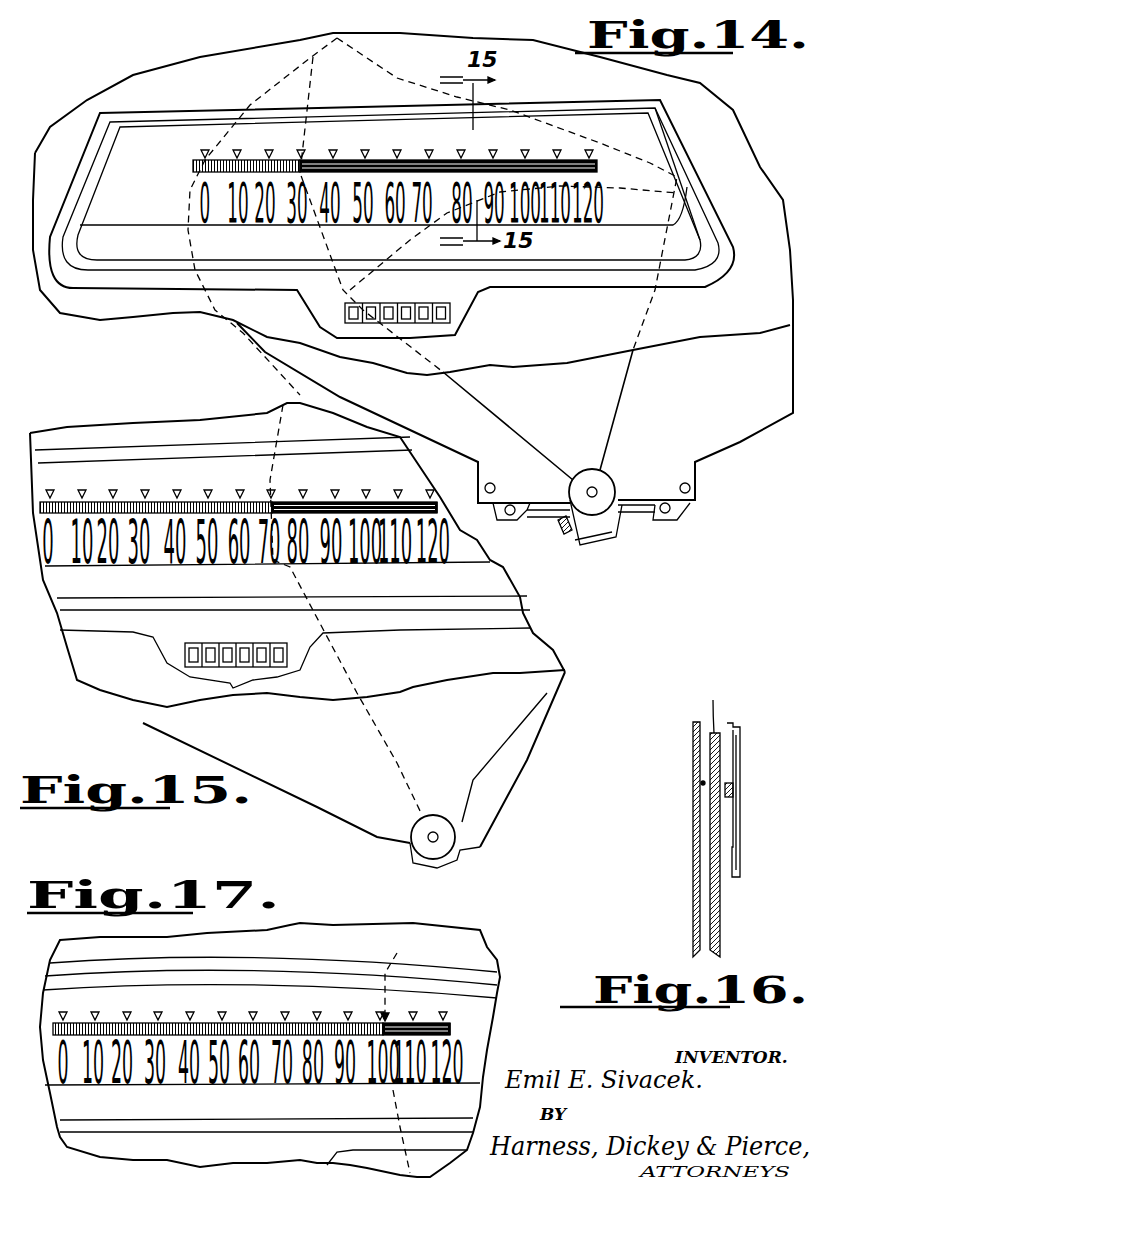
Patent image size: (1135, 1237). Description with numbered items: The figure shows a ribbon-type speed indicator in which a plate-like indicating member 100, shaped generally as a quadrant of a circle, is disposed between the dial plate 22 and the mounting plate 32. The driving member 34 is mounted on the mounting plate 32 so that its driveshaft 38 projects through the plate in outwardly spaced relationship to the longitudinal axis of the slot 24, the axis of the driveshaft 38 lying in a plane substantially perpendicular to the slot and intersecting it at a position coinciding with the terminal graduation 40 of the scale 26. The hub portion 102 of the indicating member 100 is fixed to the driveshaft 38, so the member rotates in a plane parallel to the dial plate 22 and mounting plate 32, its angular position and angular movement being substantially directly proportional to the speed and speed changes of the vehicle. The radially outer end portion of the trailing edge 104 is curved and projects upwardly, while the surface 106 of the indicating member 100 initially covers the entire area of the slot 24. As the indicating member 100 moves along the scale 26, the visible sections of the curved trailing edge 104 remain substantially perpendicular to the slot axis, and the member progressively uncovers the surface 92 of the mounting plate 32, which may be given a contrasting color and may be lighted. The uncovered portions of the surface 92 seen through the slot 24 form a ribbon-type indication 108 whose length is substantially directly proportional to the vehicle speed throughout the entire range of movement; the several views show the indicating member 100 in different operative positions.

In FIG. 14, the dial plate 22 is at (147, 175).
In FIG. 15, the dial plate 22 is at (95, 484).
In FIG. 16, the dial plate 22 is at (740, 727).
In FIG. 17, the dial plate 22 is at (98, 1011).
In FIG. 14, the slot 24 is at (252, 157).
In FIG. 15, the slot 24 is at (195, 500).
In FIG. 16, the slot 24 is at (733, 790).
In FIG. 17, the slot 24 is at (130, 1030).
In FIG. 14, the scale 26 is at (345, 145).
In FIG. 15, the scale 26 is at (300, 490).
In FIG. 17, the scale 26 is at (173, 1017).
In FIG. 16, the mounting plate 32 is at (700, 763).
In FIG. 14, the driving member 34 is at (623, 535).
In FIG. 14, the driveshaft 38 is at (588, 491).
In FIG. 15, the driveshaft 38 is at (429, 836).
In FIG. 15, the terminal graduation 40 is at (457, 483).
In FIG. 17, the terminal graduation 40 is at (457, 1023).
In FIG. 16, the surface of the mounting plate 92 is at (703, 783).
In FIG. 14, the indicating member 100 is at (630, 377).
In FIG. 15, the indicating member 100 is at (517, 730).
In FIG. 16, the indicating member 100 is at (713, 712).
In FIG. 17, the indicating member 100 is at (403, 1160).
In FIG. 14, the hub portion 102 is at (603, 482).
In FIG. 14, the trailing edge 104 is at (300, 78).
In FIG. 15, the trailing edge 104 is at (265, 425).
In FIG. 17, the trailing edge 104 is at (397, 953).
In FIG. 14, the surface of the indicating member 106 is at (663, 153).
In FIG. 16, the surface of the indicating member 106 is at (720, 760).
In FIG. 14, the ribbon-type indication 108 is at (200, 160).
In FIG. 15, the ribbon-type indication 108 is at (125, 507).
In FIG. 17, the ribbon-type indication 108 is at (298, 1023).